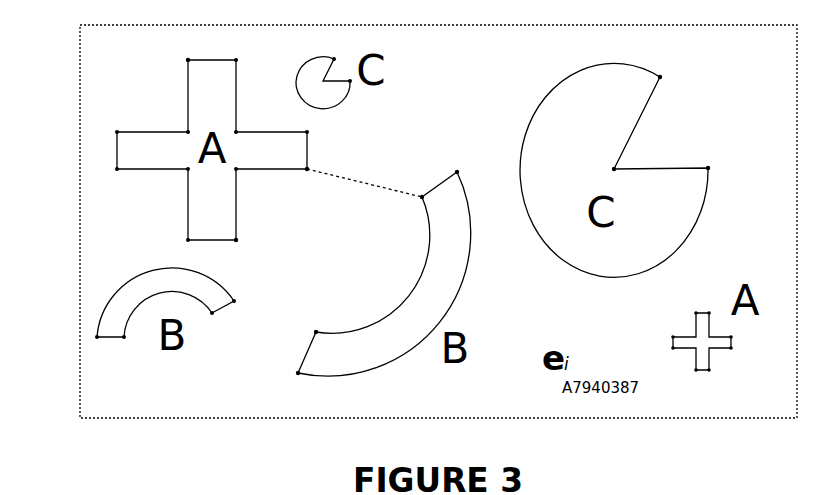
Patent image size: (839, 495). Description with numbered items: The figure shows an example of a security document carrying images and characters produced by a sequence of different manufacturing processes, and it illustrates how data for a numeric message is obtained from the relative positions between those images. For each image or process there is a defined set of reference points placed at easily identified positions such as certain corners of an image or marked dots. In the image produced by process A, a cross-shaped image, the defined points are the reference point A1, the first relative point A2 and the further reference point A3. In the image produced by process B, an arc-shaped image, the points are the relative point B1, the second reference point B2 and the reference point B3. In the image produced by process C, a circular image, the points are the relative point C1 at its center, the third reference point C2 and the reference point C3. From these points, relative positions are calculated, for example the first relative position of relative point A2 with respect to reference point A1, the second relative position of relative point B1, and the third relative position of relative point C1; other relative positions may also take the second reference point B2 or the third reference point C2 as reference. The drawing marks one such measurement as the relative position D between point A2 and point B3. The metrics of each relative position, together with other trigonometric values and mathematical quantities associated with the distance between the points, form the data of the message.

The reference point A1 is at (174, 54).
The first relative point A2 is at (296, 162).
The reference point A3 is at (247, 242).
The relative point B1 is at (308, 323).
The second reference point B2 is at (284, 381).
The reference point B3 is at (412, 207).
The relative point C1 is at (604, 161).
The third reference point C2 is at (719, 168).
The reference point C3 is at (672, 75).
The relative position D is at (353, 182).